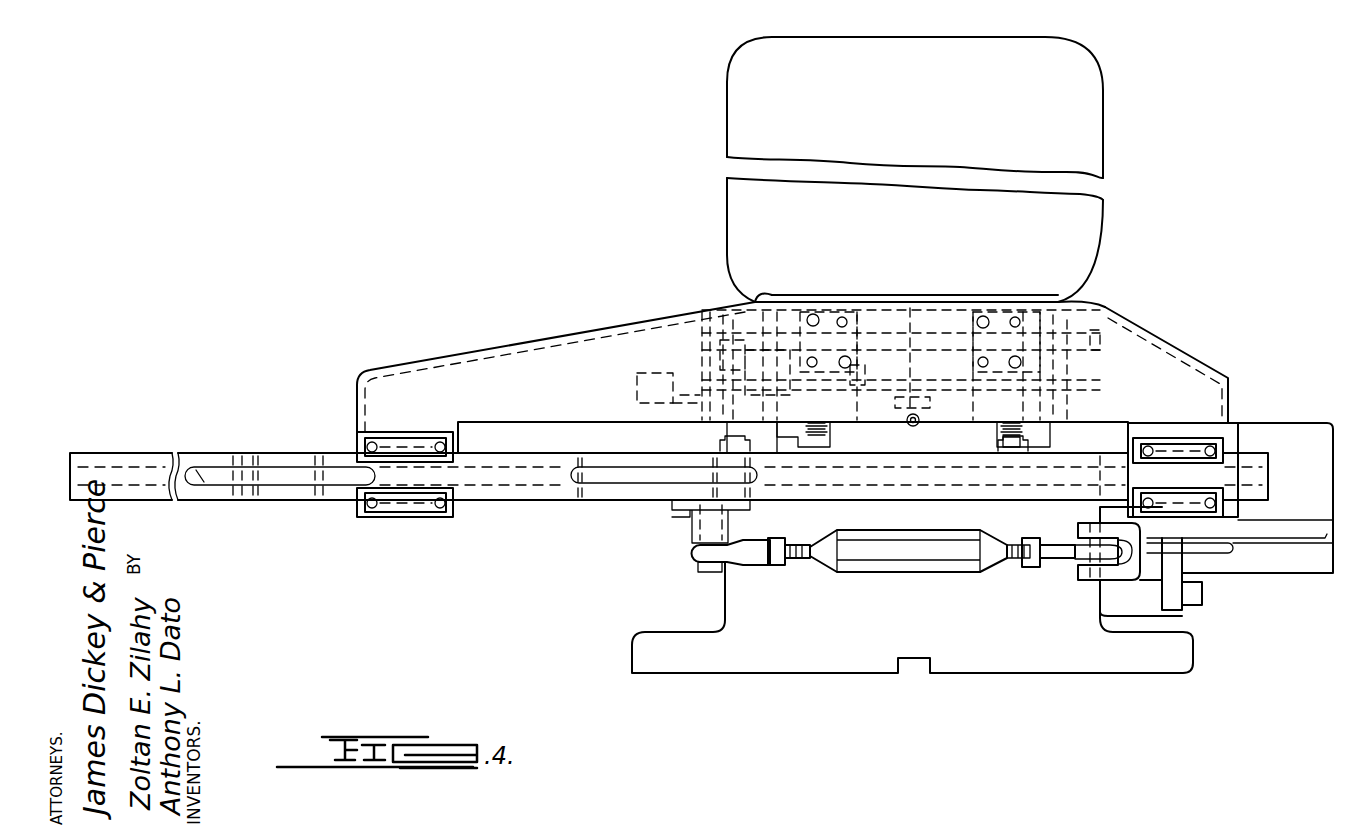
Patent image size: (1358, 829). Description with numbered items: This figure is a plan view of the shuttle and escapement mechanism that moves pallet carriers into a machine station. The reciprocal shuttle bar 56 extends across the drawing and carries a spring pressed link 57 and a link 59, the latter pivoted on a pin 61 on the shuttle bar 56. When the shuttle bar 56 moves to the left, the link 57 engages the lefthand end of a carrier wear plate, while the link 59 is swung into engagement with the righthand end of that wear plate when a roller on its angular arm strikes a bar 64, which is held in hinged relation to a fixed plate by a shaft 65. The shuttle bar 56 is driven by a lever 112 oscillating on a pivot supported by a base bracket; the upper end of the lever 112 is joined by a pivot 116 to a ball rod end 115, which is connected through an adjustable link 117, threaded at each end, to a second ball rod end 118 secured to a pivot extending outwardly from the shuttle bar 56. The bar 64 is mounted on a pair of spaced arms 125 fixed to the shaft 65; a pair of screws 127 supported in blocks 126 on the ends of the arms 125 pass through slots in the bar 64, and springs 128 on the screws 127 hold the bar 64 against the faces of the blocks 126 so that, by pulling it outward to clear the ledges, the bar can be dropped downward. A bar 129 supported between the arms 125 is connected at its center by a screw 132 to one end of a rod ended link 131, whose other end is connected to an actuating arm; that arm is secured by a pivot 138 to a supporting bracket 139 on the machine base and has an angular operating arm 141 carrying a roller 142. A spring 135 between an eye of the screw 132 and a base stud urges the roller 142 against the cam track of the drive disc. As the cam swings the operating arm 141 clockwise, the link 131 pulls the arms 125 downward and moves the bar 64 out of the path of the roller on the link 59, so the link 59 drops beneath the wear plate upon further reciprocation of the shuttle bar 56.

The reciprocal shuttle bar 56 is at (150, 453).
The spring pressed link 57 is at (292, 487).
The link 59 is at (655, 487).
The pin 61 is at (708, 573).
The bar 64 is at (1120, 435).
The shaft 65 is at (940, 318).
The lever 112 is at (1082, 580).
The ball rod end 115 is at (1057, 567).
The pivot 116 is at (1073, 533).
The adjustable link 117 is at (910, 555).
The ball rod end 118 is at (748, 560).
The spaced arms 125 is at (833, 320).
The blocks 126 is at (793, 448).
The screws 127 is at (842, 384).
The springs 128 is at (720, 437).
The bar 129 is at (990, 318).
The rod ended link 131 is at (898, 400).
The screw 132 is at (889, 318).
The spring 135 is at (911, 428).
The pivot 138 is at (766, 303).
The supporting bracket 139 is at (746, 278).
The operating arm 141 is at (688, 385).
The roller 142 is at (637, 381).